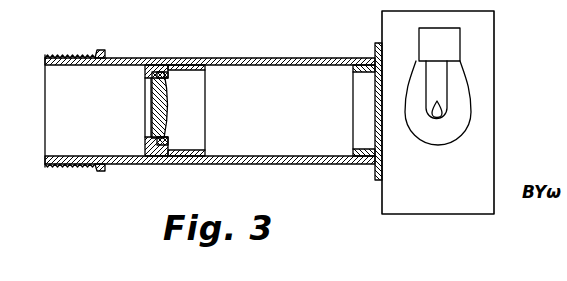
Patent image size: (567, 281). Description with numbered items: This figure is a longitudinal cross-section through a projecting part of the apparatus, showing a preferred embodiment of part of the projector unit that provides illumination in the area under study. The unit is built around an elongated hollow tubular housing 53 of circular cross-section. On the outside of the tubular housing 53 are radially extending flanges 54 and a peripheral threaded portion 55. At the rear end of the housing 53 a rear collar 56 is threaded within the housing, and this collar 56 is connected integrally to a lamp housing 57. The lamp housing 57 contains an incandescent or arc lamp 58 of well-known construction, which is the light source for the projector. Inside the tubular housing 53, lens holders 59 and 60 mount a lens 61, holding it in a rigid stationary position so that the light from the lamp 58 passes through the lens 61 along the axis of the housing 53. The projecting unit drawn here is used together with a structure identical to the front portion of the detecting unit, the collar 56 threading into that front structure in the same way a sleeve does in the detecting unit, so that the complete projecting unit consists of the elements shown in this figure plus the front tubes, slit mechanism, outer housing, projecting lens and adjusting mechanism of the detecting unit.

The tubular housing 53 is at (201, 58).
The radially extending flanges 54 is at (102, 51).
The peripheral threaded portion 55 is at (63, 55).
The rear collar 56 is at (374, 43).
The lamp housing 57 is at (494, 22).
The lamp 58 is at (472, 108).
The lens holder 59 is at (143, 72).
The lens holder 60 is at (168, 76).
The lens 61 is at (153, 110).